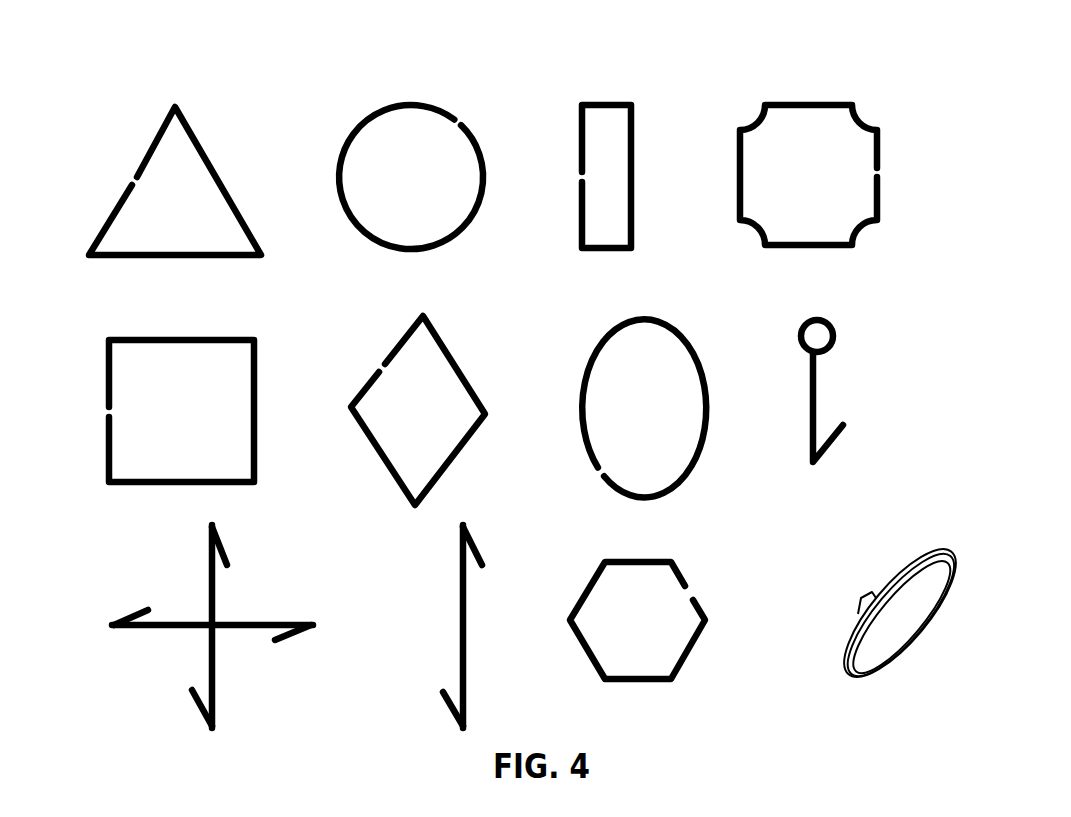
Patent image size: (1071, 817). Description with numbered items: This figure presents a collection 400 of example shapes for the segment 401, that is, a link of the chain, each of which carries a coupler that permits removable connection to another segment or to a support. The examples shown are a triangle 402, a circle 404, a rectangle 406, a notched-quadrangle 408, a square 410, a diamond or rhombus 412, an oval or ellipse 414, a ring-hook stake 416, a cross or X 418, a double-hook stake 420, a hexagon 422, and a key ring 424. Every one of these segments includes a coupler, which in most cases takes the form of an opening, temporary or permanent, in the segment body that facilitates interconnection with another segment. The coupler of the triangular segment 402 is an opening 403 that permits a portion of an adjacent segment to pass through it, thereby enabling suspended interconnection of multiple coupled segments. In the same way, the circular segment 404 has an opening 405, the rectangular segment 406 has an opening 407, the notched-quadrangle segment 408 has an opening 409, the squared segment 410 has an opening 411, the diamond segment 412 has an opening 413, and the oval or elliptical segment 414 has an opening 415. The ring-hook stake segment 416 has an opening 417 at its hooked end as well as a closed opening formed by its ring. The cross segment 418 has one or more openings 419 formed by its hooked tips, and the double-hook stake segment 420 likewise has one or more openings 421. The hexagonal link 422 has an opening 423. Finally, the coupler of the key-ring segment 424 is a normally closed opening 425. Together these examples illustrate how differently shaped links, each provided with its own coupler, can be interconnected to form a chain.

The set of wire form shapes 400 is at (757, 50).
The segment 401 is at (138, 77).
The triangle 402 is at (198, 135).
The opening 403 is at (133, 178).
The circle 404 is at (348, 133).
The opening 405 is at (459, 119).
The rectangle 406 is at (634, 122).
The opening 407 is at (576, 177).
The notched-quadrangle 408 is at (868, 127).
The opening 409 is at (884, 173).
The square 410 is at (258, 356).
The opening 411 is at (104, 409).
The diamond (rhombus) 412 is at (454, 350).
The opening 413 is at (382, 359).
The oval or ellipse 414 is at (699, 352).
The opening 415 is at (597, 474).
The ring-hook stake 416 is at (818, 372).
The opening 417 is at (840, 449).
The cross (X) 418 is at (207, 570).
The opening(s) 419 is at (230, 552).
The double-hook stake 420 is at (461, 606).
The opening(s) 421 is at (482, 546).
The hexagon 422 is at (694, 648).
The opening 423 is at (691, 590).
The key ring 424 is at (931, 656).
The normally closed opening 425 is at (850, 597).